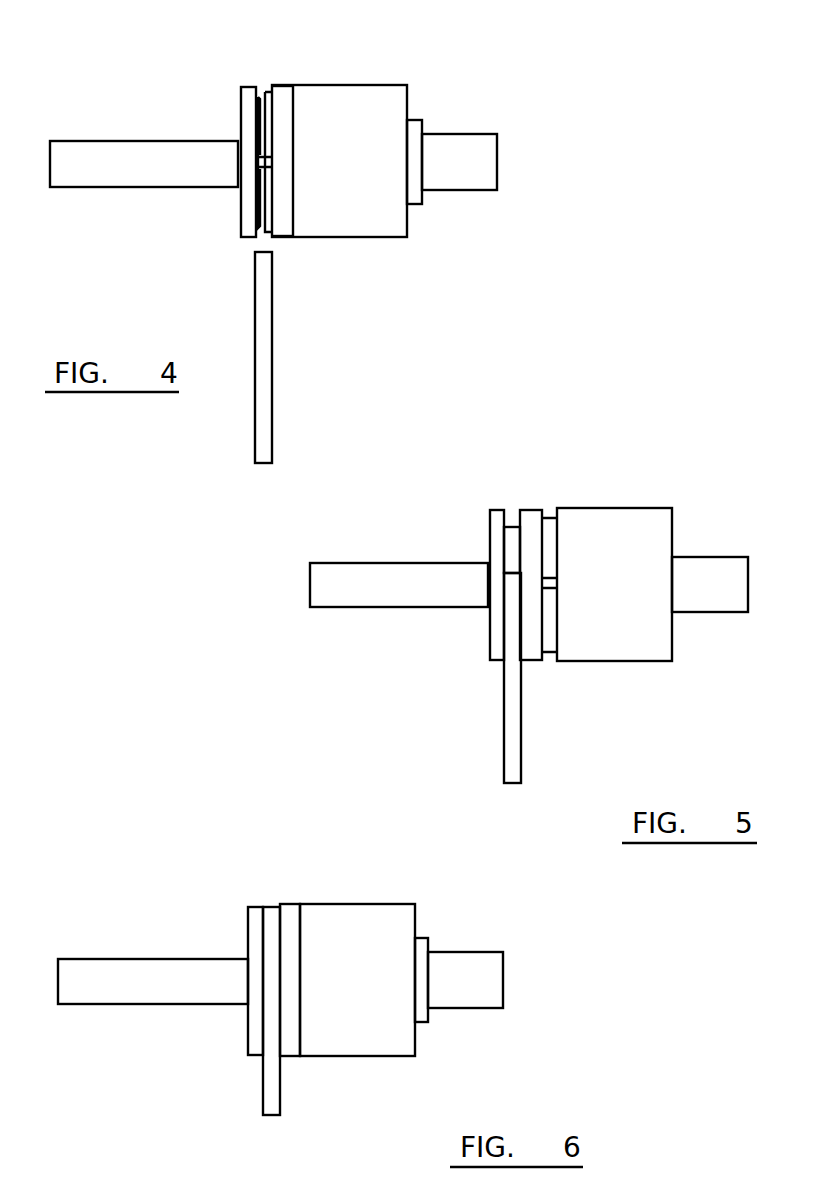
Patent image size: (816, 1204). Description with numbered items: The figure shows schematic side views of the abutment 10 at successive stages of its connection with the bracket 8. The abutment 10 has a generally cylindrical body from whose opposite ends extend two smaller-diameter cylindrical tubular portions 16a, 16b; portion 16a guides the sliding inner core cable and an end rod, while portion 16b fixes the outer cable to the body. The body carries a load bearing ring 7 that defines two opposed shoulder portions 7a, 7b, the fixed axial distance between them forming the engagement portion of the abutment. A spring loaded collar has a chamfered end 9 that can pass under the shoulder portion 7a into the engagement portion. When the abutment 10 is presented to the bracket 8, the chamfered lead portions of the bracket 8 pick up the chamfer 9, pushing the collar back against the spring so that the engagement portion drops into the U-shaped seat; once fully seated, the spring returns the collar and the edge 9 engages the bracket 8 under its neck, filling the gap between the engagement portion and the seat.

In FIG. 4, the load bearing ring 7 is at (287, 234).
In FIG. 5, the shoulder portion 7a is at (497, 510).
In FIG. 6, the shoulder portion 7a is at (253, 913).
In FIG. 5, the shoulder portion 7b is at (532, 517).
In FIG. 6, the shoulder portion 7b is at (290, 913).
In FIG. 4, the bracket 8 is at (265, 403).
In FIG. 5, the bracket 8 is at (512, 757).
In FIG. 6, the bracket 8 is at (270, 913).
In FIG. 4, the chamfered end 9 is at (260, 100).
In FIG. 4, the abutment 10 is at (423, 100).
In FIG. 4, the cylindrical tubular portion 16a is at (122, 162).
In FIG. 5, the cylindrical tubular portion 16a is at (358, 588).
In FIG. 6, the cylindrical tubular portion 16a is at (107, 980).
In FIG. 4, the cylindrical tubular portion 16b is at (463, 173).
In FIG. 5, the cylindrical tubular portion 16b is at (703, 577).
In FIG. 6, the cylindrical tubular portion 16b is at (466, 973).